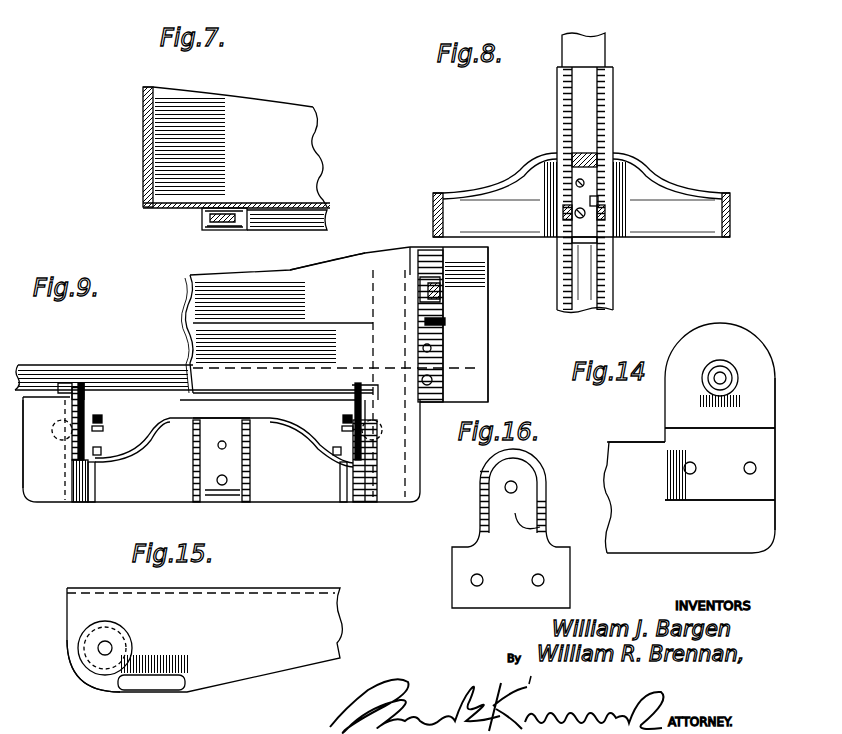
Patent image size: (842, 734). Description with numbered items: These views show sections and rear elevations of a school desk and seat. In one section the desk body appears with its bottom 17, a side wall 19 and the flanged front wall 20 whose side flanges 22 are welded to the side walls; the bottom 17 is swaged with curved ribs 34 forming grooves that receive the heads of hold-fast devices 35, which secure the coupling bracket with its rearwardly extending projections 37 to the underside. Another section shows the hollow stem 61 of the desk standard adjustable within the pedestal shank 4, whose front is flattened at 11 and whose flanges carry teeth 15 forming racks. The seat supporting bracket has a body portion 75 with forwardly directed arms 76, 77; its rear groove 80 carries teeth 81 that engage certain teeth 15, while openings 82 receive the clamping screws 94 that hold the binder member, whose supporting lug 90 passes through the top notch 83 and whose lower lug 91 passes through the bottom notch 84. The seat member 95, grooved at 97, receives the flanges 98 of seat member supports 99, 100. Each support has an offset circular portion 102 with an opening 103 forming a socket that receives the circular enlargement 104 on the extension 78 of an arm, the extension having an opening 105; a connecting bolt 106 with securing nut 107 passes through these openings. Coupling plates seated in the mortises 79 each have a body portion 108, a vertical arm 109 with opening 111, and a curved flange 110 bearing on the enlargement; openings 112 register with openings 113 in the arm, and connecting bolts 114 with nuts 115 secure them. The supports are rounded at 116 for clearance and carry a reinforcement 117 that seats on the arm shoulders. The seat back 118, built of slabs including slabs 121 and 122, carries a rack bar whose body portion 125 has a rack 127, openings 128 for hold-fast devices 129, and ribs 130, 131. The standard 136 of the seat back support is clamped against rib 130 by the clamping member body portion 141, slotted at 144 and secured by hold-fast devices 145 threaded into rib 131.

In FIG. 9, the shank 4 is at (509, 311).
In FIG. 8, the flattened portion 11 is at (585, 279).
In FIG. 8, the teeth 15 is at (613, 102).
In FIG. 7, the bottom 17 is at (305, 207).
In FIG. 7, the side wall 19 is at (143, 150).
In FIG. 7, the flanged front wall 20 is at (280, 101).
In FIG. 7, the side flanges 22 is at (156, 93).
In FIG. 7, the ribs 34 is at (236, 212).
In FIG. 7, the hold-fast devices 35 is at (226, 208).
In FIG. 7, the projections 37 is at (238, 231).
In FIG. 8, the hollow stem 61 is at (605, 47).
In FIG. 8, the body portion 75 is at (695, 233).
In FIG. 9, the body portion 75 is at (172, 495).
In FIG. 8, the arm 76 is at (730, 217).
In FIG. 9, the arm 76 is at (72, 477).
In FIG. 14, the arm 76 is at (622, 452).
In FIG. 8, the arm 77 is at (433, 212).
In FIG. 9, the arm 77 is at (370, 481).
In FIG. 9, the extension 78 is at (68, 431).
In FIG. 14, the extension 78 is at (762, 388).
In FIG. 14, the mortise 79 is at (745, 492).
In FIG. 9, the groove 80 is at (234, 456).
In FIG. 8, the teeth 81 is at (573, 215).
In FIG. 9, the teeth 81 is at (222, 500).
In FIG. 8, the openings 82 is at (575, 184).
In FIG. 9, the openings 82 is at (222, 450).
In FIG. 9, the notch 83 is at (233, 426).
In FIG. 9, the notch 84 is at (234, 472).
In FIG. 8, the supporting lug 90 is at (613, 150).
In FIG. 8, the lug 91 is at (584, 248).
In FIG. 8, the clamping screws 94 is at (598, 205).
In FIG. 9, the seat member 95 is at (156, 373).
In FIG. 9, the grooves 97 is at (88, 390).
In FIG. 9, the flanges 98 is at (66, 385).
In FIG. 9, the seat member support 99 is at (365, 405).
In FIG. 9, the seat member support 100 is at (70, 410).
In FIG. 15, the seat member support 100 is at (261, 672).
In FIG. 15, the offset circular portion 102 is at (78, 652).
In FIG. 15, the opening 103 is at (125, 640).
In FIG. 14, the circular enlargement 104 is at (700, 391).
In FIG. 14, the opening 105 is at (722, 378).
In FIG. 9, the connecting bolt 106 is at (100, 421).
In FIG. 9, the securing nut 107 is at (100, 429).
In FIG. 9, the body portion 108 is at (78, 500).
In FIG. 16, the body portion 108 is at (568, 573).
In FIG. 16, the vertical arm 109 is at (548, 527).
In FIG. 9, the curved flange 110 is at (88, 411).
In FIG. 16, the curved flange 110 is at (480, 502).
In FIG. 16, the opening 111 is at (514, 484).
In FIG. 16, the openings 112 is at (480, 578).
In FIG. 14, the openings 113 is at (748, 464).
In FIG. 9, the connecting bolts 114 is at (103, 456).
In FIG. 9, the securing nuts 115 is at (92, 502).
In FIG. 14, the securing nuts 115 is at (760, 428).
In FIG. 15, the rounded corner 116 is at (80, 685).
In FIG. 15, the reinforcement 117 is at (158, 685).
In FIG. 9, the seat back 118 is at (264, 280).
In FIG. 9, the slab 121 is at (304, 318).
In FIG. 9, the slab 122 is at (296, 355).
In FIG. 9, the body portion 125 is at (415, 343).
In FIG. 9, the rack 127 is at (444, 258).
In FIG. 9, the openings 128 is at (434, 381).
In FIG. 9, the hold-fast devices 129 is at (433, 350).
In FIG. 9, the rib 130 is at (418, 259).
In FIG. 9, the rib 131 is at (440, 326).
In FIG. 9, the standard 136 is at (385, 290).
In FIG. 9, the body portion 141 is at (420, 284).
In FIG. 9, the slot 144 is at (445, 288).
In FIG. 9, the hold-fast devices 145 is at (488, 303).